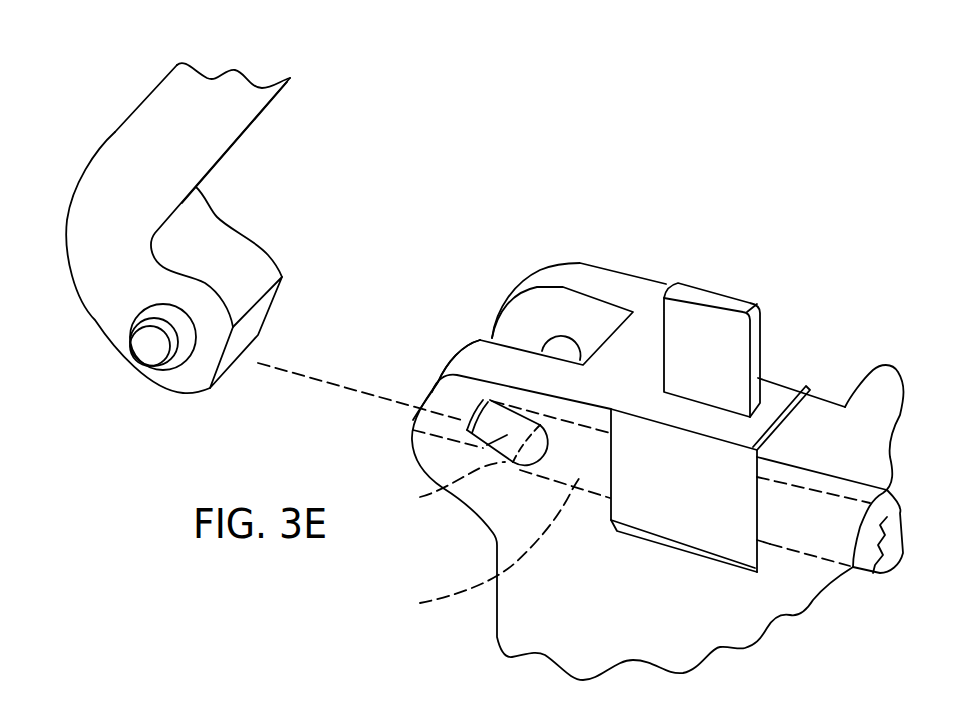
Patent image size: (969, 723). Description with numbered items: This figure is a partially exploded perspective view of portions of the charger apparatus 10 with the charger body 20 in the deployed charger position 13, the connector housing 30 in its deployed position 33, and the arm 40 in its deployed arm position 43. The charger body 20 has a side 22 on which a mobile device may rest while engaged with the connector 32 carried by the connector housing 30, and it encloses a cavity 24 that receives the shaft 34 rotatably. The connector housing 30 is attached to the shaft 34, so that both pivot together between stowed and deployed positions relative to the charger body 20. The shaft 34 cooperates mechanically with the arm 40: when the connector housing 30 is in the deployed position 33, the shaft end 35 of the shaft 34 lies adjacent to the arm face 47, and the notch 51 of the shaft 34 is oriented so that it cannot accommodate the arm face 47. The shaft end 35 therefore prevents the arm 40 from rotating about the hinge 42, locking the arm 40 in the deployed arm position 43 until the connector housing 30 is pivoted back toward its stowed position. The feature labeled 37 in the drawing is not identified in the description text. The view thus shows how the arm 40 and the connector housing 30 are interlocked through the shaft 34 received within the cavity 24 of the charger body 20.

The charger apparatus 10 is at (765, 75).
The deployed charger position 13 is at (827, 122).
The charger body 20 is at (700, 622).
The side 22 is at (870, 400).
The cavity 24 is at (592, 597).
The connector housing 30 is at (772, 403).
The connector 32 is at (697, 313).
The deployed position 33 is at (790, 397).
The shaft 34 is at (420, 603).
The shaft end 35 is at (480, 412).
The aperture 37 is at (413, 430).
The arm 40 is at (162, 82).
The hinge 42 is at (153, 353).
The deployed arm position 43 is at (122, 145).
The arm face 47 is at (253, 327).
The notch 51 is at (420, 497).